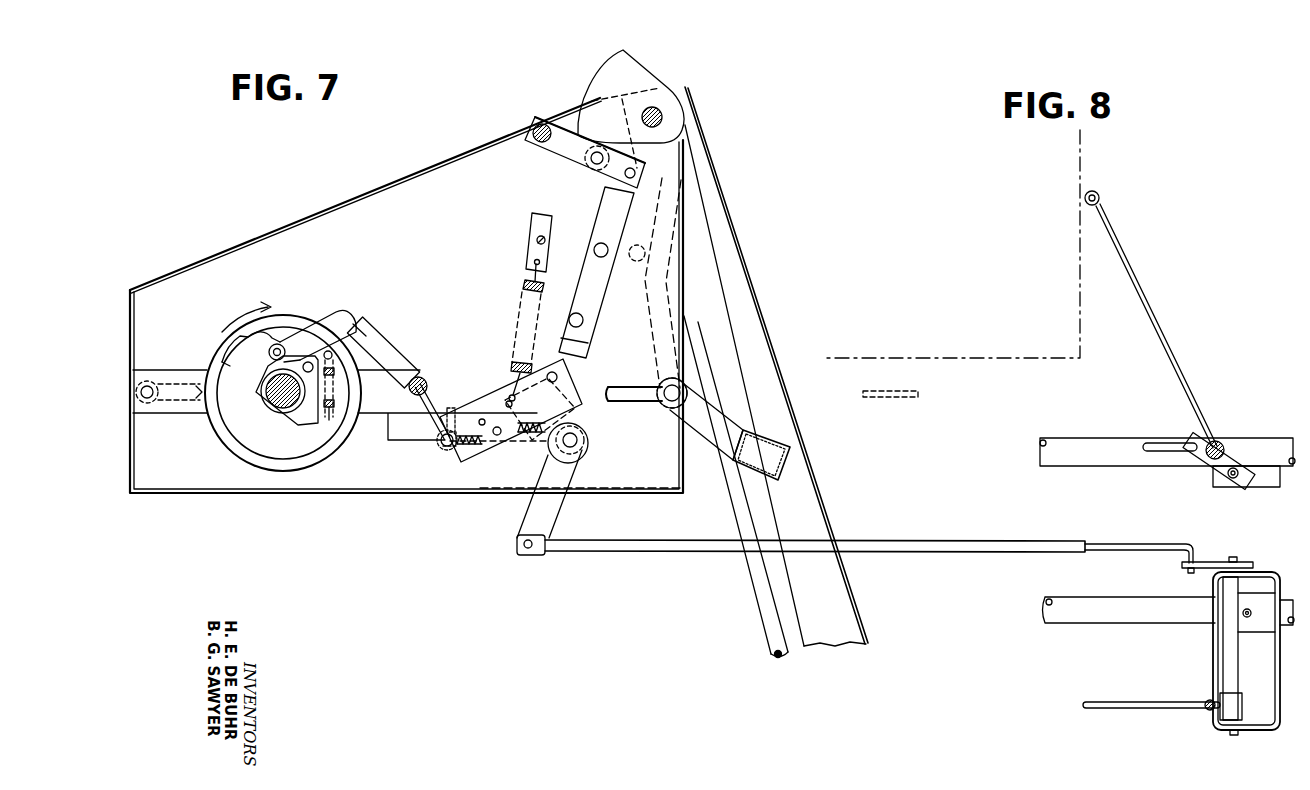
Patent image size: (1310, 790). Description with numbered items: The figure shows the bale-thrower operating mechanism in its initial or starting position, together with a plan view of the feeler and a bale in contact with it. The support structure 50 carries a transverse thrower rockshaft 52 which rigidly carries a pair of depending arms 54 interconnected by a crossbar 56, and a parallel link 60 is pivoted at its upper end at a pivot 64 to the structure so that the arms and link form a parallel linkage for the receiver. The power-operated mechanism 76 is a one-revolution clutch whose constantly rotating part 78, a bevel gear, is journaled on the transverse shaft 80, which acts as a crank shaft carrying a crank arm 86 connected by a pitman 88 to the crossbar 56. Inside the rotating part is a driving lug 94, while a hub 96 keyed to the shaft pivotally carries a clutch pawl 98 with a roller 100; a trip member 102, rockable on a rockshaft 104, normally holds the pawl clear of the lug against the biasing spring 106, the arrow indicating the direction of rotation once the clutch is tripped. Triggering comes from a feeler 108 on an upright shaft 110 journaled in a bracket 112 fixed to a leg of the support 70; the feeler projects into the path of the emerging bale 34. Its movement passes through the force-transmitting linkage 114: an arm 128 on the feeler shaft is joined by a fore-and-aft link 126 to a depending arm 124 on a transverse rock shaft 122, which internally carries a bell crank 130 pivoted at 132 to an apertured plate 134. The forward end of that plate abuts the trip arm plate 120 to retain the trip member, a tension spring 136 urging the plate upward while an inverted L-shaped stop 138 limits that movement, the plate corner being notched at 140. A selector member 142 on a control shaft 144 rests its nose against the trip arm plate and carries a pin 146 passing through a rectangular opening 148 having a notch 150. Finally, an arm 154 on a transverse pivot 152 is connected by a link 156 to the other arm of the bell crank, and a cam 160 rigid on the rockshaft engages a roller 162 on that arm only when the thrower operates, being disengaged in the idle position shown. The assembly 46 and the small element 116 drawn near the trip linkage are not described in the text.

In FIG. 8, the bale 34 is at (1079, 250).
In FIG. 7, the trip mechanism 46 is at (368, 162).
In FIG. 7, the support structure 50 is at (264, 242).
In FIG. 7, the thrower rockshaft 52 is at (664, 117).
In FIG. 7, the depending arms 54 is at (740, 284).
In FIG. 8, the depending arms 54 is at (914, 393).
In FIG. 7, the crossbar 56 is at (786, 442).
In FIG. 7, the parallel link 60 is at (770, 646).
In FIG. 7, the upper pivot of parallel link 64 is at (648, 238).
In FIG. 8, the support for protective structure 70 is at (1079, 468).
In FIG. 7, the power-operated mechanism 76 is at (320, 276).
In FIG. 7, the constantly rotating part 78 is at (210, 446).
In FIG. 7, the transverse shaft 80 is at (274, 402).
In FIG. 7, the crank arm 86 is at (172, 368).
In FIG. 7, the pitman 88 is at (640, 387).
In FIG. 7, the driving lug 94 is at (228, 357).
In FIG. 7, the hub 96 is at (312, 424).
In FIG. 7, the clutch pawl 98 is at (342, 315).
In FIG. 7, the roller 100 is at (268, 360).
In FIG. 7, the trip member 102 is at (383, 340).
In FIG. 7, the rockshaft 104 is at (418, 376).
In FIG. 7, the biasing spring 106 is at (334, 410).
In FIG. 8, the feeler 108 is at (1166, 352).
In FIG. 8, the upright shaft 110 is at (1233, 480).
In FIG. 8, the bracket 112 is at (1268, 488).
In FIG. 7, the force-transmitting linkage 114 is at (967, 563).
In FIG. 7, the eye 116 is at (441, 448).
In FIG. 7, the trip arm plate 120 is at (432, 412).
In FIG. 7, the transverse rock shaft 122 is at (586, 444).
In FIG. 7, the depending arm 124 is at (548, 515).
In FIG. 7, the fore-and-aft link 126 is at (1043, 539).
In FIG. 8, the fore-and-aft link 126 is at (1158, 442).
In FIG. 8, the arm 128 is at (1198, 460).
In FIG. 7, the bell crank 130 is at (580, 426).
In FIG. 7, the pivot 132 is at (568, 368).
In FIG. 7, the apertured plate 134 is at (567, 400).
In FIG. 7, the tension spring 136 is at (528, 285).
In FIG. 7, the inverted L-shaped stop 138 is at (452, 405).
In FIG. 7, the notch 140 is at (436, 442).
In FIG. 7, the selector member 142 is at (466, 450).
In FIG. 7, the control shaft 144 is at (494, 440).
In FIG. 7, the pin 146 is at (528, 438).
In FIG. 7, the rectangular opening 148 is at (508, 400).
In FIG. 7, the notch 150 is at (482, 418).
In FIG. 7, the transverse pivot 152 is at (531, 139).
In FIG. 7, the arm 154 is at (556, 128).
In FIG. 7, the link 156 is at (604, 207).
In FIG. 7, the cam 160 is at (627, 56).
In FIG. 7, the roller 162 is at (580, 174).